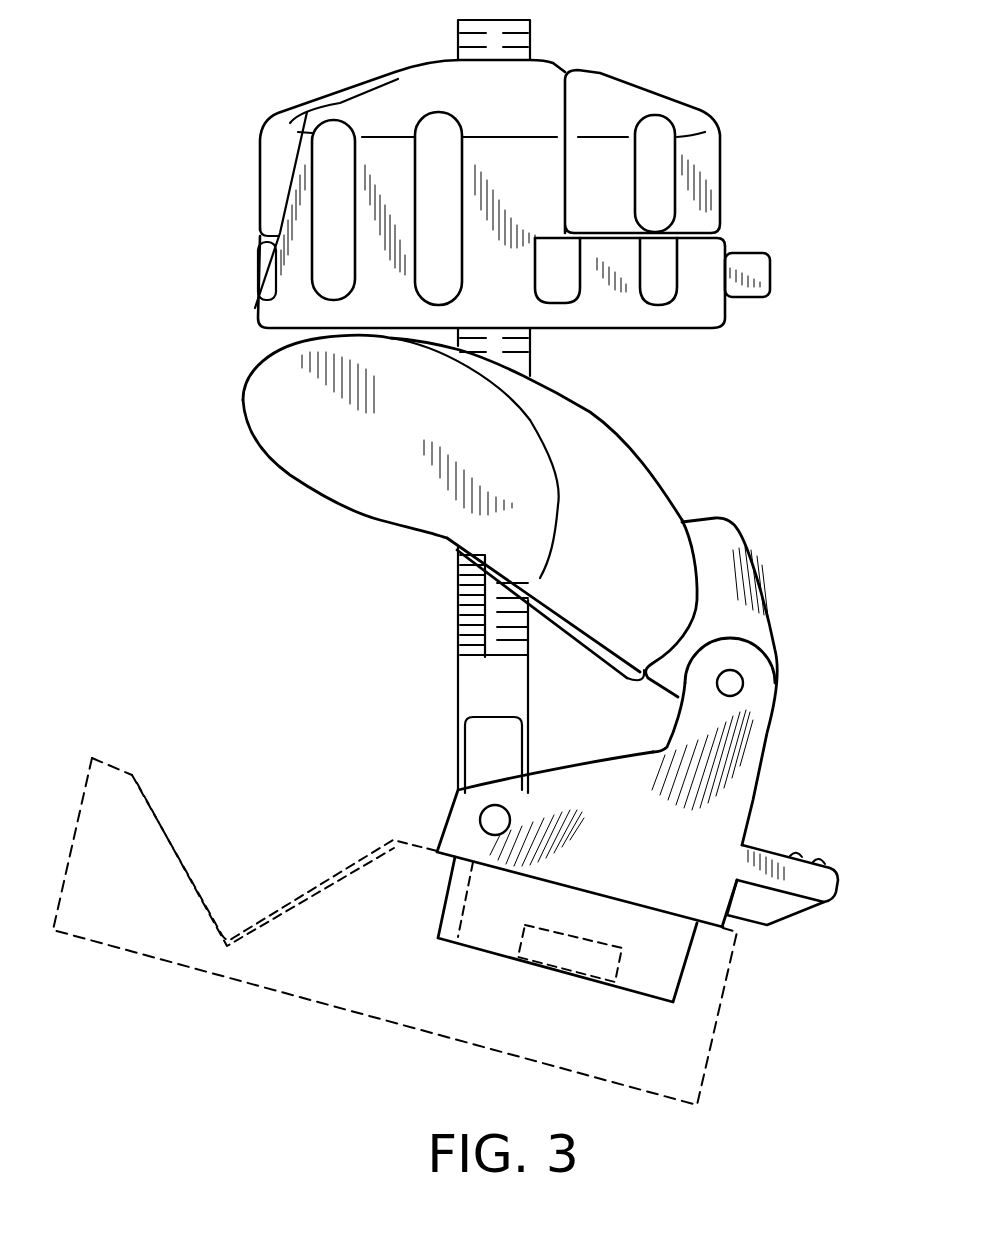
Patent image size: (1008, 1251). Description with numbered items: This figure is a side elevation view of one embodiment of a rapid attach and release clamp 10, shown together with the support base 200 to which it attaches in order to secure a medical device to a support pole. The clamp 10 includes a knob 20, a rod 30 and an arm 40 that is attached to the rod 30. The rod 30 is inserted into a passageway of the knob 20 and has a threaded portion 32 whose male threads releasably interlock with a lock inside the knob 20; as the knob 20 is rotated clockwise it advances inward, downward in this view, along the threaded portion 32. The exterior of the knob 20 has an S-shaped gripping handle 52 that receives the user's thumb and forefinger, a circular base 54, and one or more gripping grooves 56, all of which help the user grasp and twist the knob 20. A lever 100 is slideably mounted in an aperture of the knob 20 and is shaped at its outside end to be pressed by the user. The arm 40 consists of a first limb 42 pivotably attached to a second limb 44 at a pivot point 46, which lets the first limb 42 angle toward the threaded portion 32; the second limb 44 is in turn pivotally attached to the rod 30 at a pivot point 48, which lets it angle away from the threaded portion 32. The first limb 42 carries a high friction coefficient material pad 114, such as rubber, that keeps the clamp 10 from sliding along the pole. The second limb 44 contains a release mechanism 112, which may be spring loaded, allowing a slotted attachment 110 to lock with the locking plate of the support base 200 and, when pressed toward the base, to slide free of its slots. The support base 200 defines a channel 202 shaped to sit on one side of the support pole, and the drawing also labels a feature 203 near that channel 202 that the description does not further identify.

The clamp 10 is at (828, 126).
The knob 20 is at (512, 204).
The gripping handle 52 is at (372, 100).
The circular base 54 is at (712, 320).
The gripping grooves 56 is at (413, 292).
The lever 100 is at (760, 268).
The rod 30 is at (438, 560).
The threaded portion 32 is at (497, 607).
The first limb 42 is at (627, 463).
The arm 40 is at (726, 654).
The high friction coefficient material pad 114 is at (592, 637).
The pivot point 46 is at (745, 683).
The second limb 44 is at (757, 782).
The pivot point 48 is at (462, 820).
The slotted attachment 110 is at (688, 953).
The release mechanism 112 is at (825, 883).
The support base 200 is at (732, 1087).
The channel 202 is at (137, 777).
The pegboard slot surface 203 is at (178, 850).